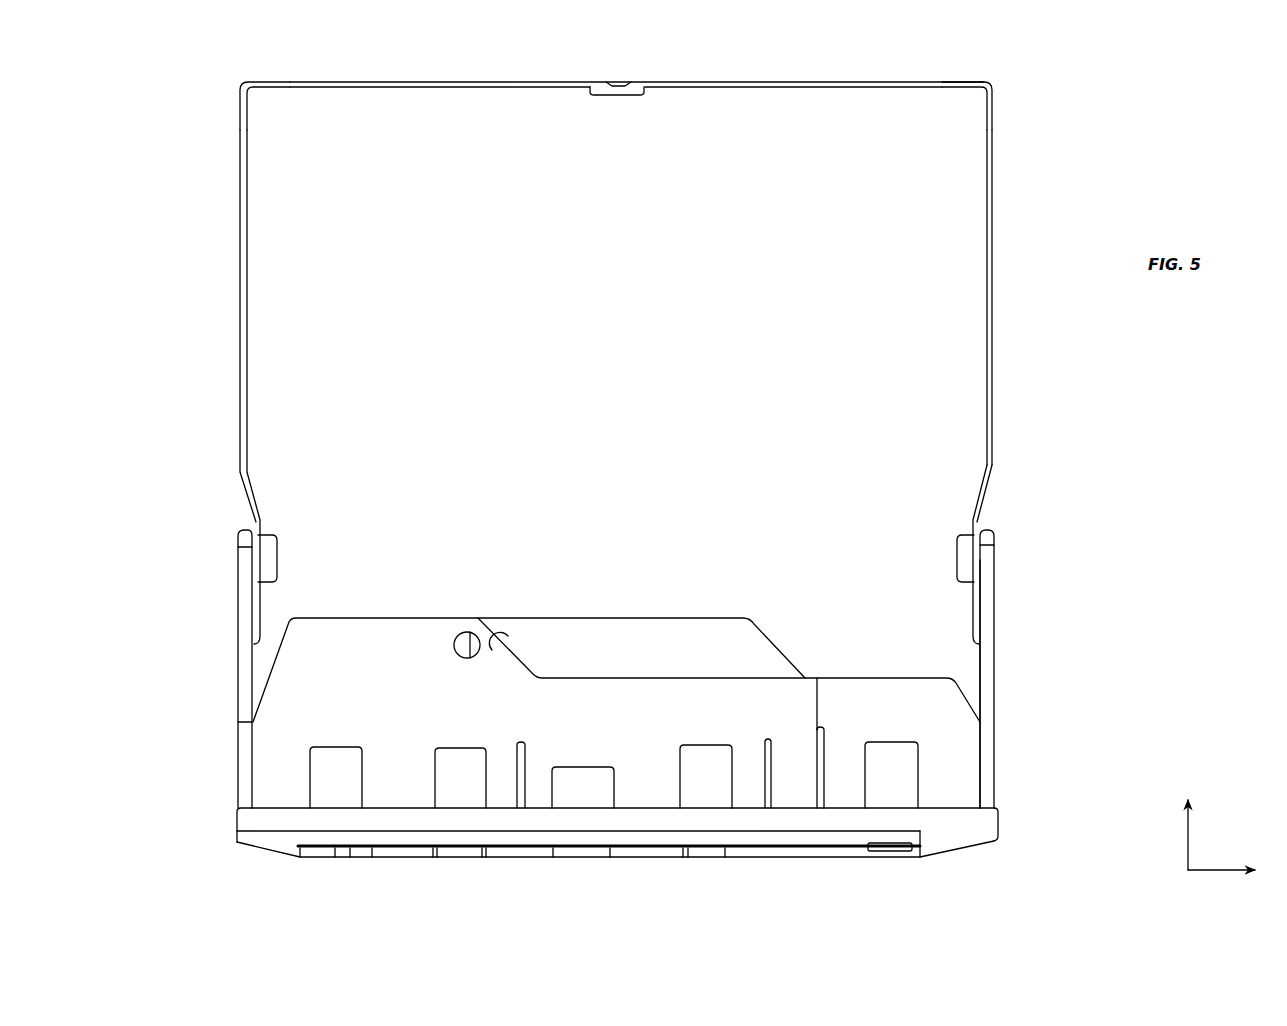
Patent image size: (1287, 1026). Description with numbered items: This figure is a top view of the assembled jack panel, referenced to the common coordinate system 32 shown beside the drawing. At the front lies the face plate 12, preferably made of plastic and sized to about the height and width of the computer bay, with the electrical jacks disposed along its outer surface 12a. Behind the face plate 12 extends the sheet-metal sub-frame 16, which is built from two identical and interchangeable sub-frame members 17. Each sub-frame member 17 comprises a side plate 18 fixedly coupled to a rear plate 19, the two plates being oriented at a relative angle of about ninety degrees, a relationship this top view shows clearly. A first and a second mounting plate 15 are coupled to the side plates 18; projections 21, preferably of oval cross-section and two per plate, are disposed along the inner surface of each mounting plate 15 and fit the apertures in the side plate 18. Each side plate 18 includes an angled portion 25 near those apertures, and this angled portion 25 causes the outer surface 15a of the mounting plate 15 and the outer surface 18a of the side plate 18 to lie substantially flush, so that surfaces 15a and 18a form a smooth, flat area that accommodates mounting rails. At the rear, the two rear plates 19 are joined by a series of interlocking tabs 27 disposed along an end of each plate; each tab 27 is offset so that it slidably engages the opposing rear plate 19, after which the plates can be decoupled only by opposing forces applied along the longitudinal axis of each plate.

The face plate 12 is at (1010, 826).
The outer surface 12a is at (255, 848).
The mounting plate 15 is at (1028, 677).
The outer surface 15a is at (998, 588).
The sub-frame 16 is at (203, 460).
The sub-frame member 17 is at (313, 100).
The side plate 18 is at (1050, 362).
The outer surface 18a is at (996, 303).
The rear plate 19 is at (787, 104).
The projection 21 is at (958, 532).
The angled portion 25 is at (990, 494).
The interlocking tab 27 is at (603, 93).
The coordinate system 32 is at (1190, 868).